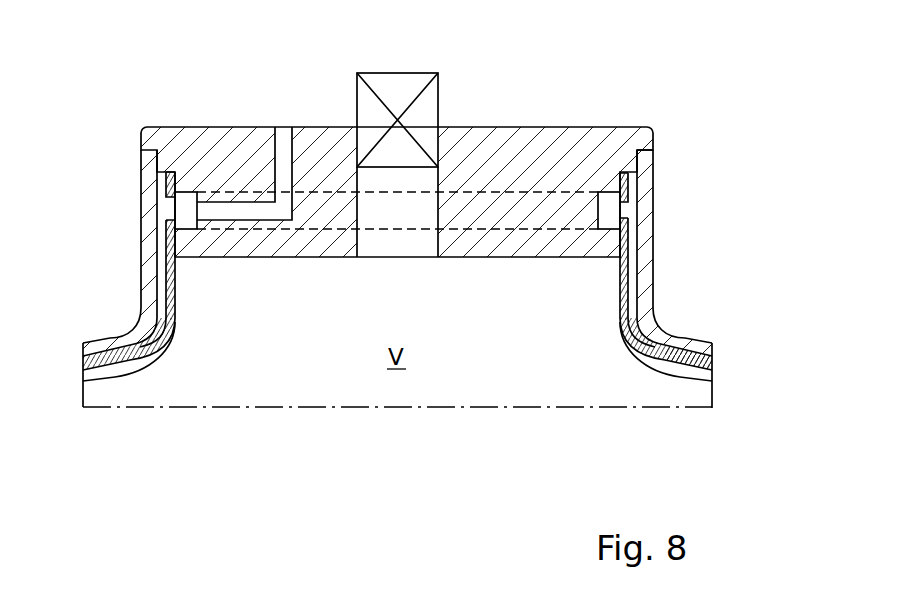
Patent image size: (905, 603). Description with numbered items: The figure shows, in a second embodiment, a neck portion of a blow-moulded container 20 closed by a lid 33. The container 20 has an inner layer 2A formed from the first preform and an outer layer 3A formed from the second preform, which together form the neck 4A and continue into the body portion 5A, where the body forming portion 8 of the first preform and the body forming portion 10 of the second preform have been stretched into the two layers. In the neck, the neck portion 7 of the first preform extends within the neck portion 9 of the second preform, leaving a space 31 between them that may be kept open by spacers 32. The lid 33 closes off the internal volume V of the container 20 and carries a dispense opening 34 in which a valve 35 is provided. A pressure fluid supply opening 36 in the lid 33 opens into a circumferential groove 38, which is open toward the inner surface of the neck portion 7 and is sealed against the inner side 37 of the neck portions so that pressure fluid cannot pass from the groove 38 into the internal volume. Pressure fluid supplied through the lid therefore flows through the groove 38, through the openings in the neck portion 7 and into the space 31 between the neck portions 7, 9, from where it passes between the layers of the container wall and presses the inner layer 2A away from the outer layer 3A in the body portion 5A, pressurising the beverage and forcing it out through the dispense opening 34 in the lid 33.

The inner layer 2A is at (695, 368).
The outer layer 3A is at (687, 356).
The neck 4A is at (678, 210).
The body portion 5A is at (704, 301).
The neck portion 7 is at (625, 320).
The body forming portion 8 is at (252, 369).
The neck portion 9 is at (646, 265).
The body forming portion 10 is at (712, 338).
The container 20 is at (717, 137).
The space 31 is at (162, 233).
The spacer 32 is at (161, 256).
The lid 33 is at (586, 140).
The dispense opening 34 is at (373, 250).
The valve 35 is at (397, 88).
The pressure fluid supply opening 36 is at (284, 150).
The inner side 37 is at (632, 283).
The circumferential groove 38 is at (185, 207).